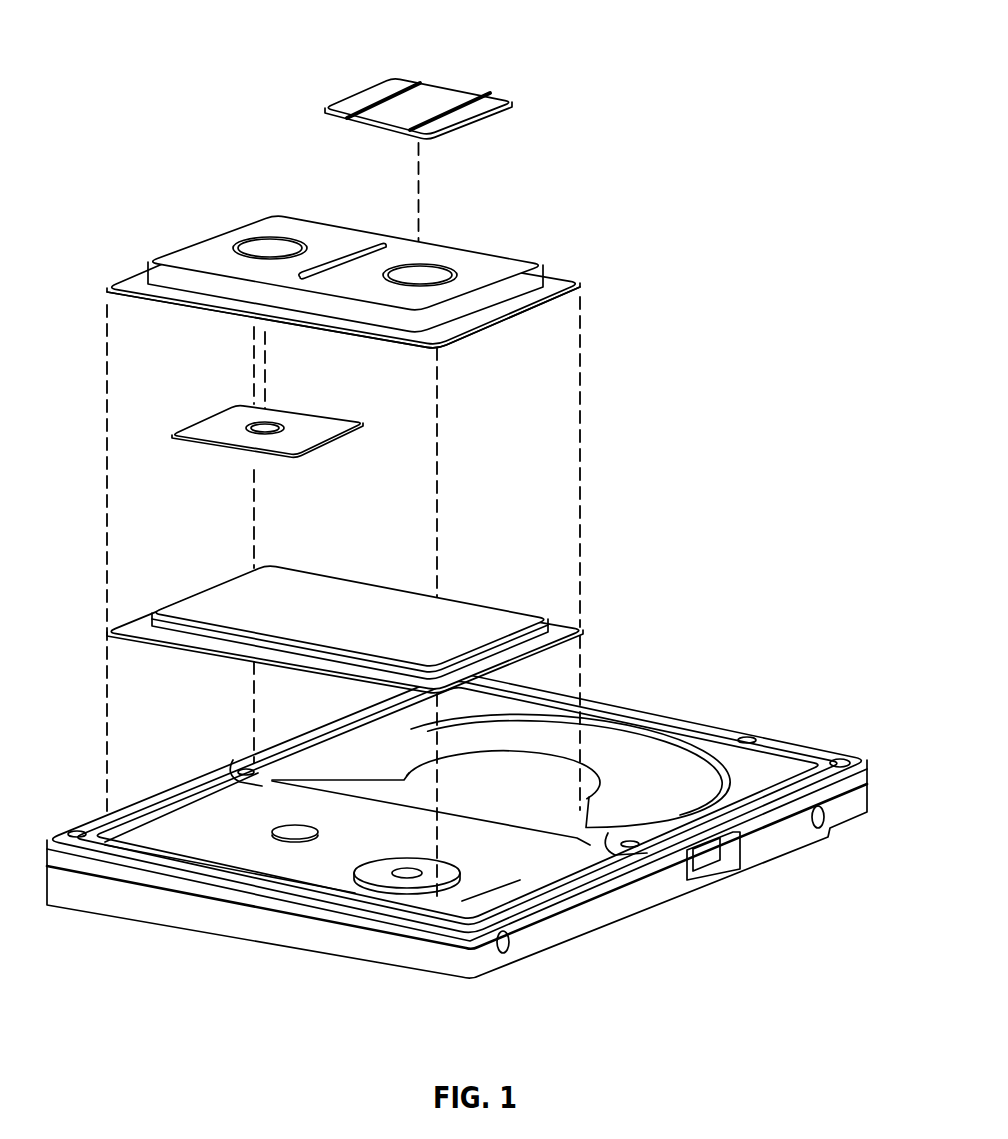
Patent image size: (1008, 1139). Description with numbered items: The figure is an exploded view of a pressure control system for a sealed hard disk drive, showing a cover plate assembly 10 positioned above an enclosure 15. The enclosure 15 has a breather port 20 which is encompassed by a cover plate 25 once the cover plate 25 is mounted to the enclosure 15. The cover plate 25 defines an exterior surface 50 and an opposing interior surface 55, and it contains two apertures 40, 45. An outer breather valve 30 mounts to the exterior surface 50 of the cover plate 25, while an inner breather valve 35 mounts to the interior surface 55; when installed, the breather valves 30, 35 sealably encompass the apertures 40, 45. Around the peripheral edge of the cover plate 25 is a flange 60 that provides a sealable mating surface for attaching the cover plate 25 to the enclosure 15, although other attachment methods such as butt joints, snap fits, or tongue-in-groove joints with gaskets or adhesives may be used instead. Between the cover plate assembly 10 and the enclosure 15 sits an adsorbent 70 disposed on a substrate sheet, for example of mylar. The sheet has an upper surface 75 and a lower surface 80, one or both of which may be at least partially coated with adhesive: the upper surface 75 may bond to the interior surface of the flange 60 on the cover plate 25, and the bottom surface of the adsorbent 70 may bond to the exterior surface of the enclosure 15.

The cover plate assembly 10 is at (147, 108).
The enclosure 15 is at (850, 752).
The breather port 20 is at (320, 883).
The cover plate 25 is at (197, 243).
The outer breather valve 30 is at (474, 76).
The inner breather valve 35 is at (216, 451).
The aperture 40 is at (422, 268).
The aperture 45 is at (268, 245).
The exterior surface 50 is at (520, 262).
The interior surface 55 is at (479, 352).
The flange 60 is at (572, 290).
The adsorbent 70 is at (458, 597).
The upper surface 75 is at (565, 628).
The lower surface 80 is at (558, 653).